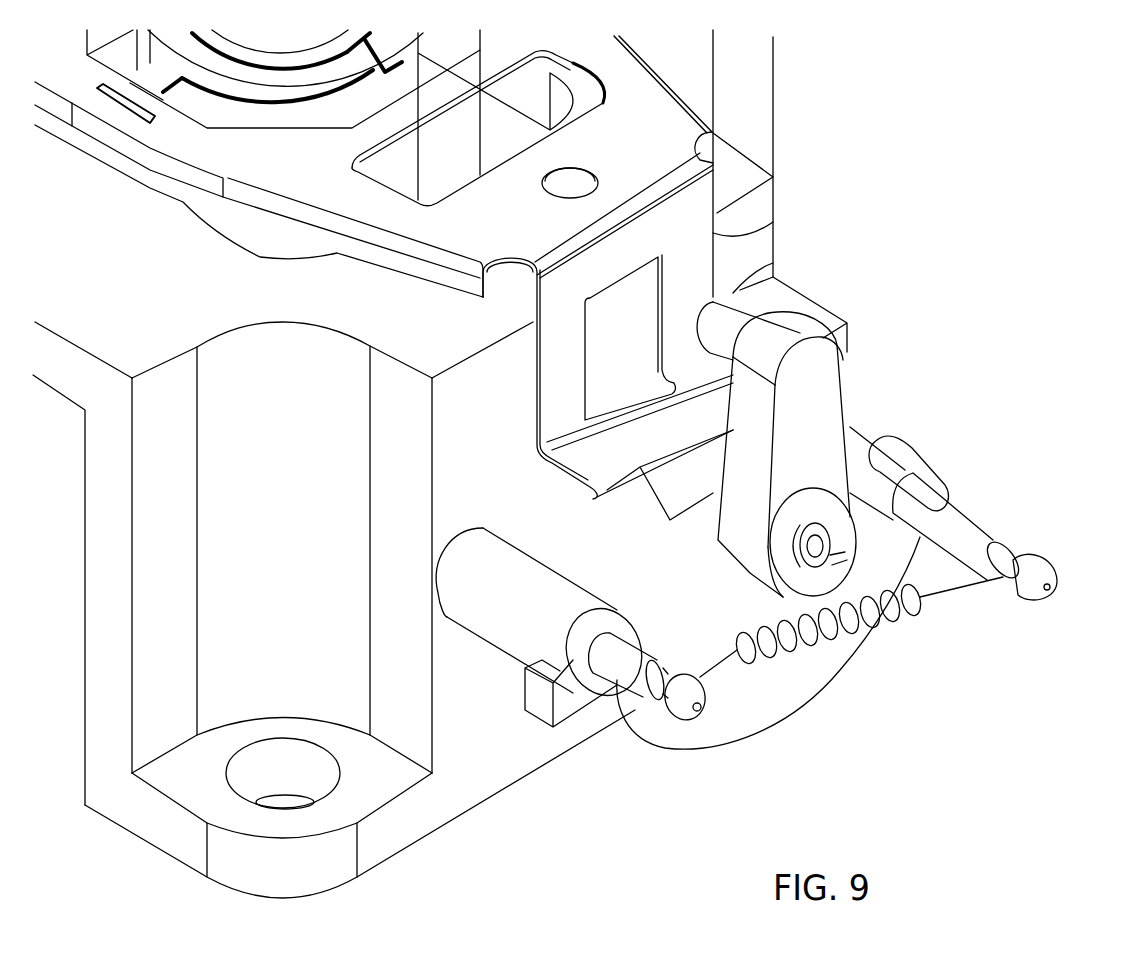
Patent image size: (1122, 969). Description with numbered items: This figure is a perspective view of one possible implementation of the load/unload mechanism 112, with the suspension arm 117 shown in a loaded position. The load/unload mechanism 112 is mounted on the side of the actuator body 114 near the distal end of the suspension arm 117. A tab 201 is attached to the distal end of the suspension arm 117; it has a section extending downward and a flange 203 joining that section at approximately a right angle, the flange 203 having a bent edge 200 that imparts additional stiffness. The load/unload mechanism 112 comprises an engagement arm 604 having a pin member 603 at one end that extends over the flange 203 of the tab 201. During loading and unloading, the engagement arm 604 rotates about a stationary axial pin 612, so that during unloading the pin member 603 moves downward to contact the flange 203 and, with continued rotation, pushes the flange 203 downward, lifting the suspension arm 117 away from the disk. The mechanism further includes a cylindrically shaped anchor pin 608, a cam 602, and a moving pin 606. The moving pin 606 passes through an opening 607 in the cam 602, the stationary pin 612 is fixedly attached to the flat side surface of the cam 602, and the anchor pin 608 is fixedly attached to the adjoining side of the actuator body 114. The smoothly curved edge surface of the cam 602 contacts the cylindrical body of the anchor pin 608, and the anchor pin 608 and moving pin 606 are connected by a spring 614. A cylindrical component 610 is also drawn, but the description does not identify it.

The load/unload mechanism 112 is at (1008, 391).
The actuator body 114 is at (390, 833).
The suspension arm 117 is at (663, 137).
The bent edge 200 is at (590, 488).
The tab 201 is at (742, 232).
The flange 203 is at (580, 447).
The cam 602 is at (733, 708).
The pin member 603 is at (727, 317).
The engagement arm 604 is at (820, 395).
The moving pin 606 is at (990, 537).
The opening 607 is at (927, 483).
The anchor pin 608 is at (632, 678).
The cylinder 610 is at (617, 597).
The stationary axial pin 612 is at (817, 553).
The spring 614 is at (873, 630).